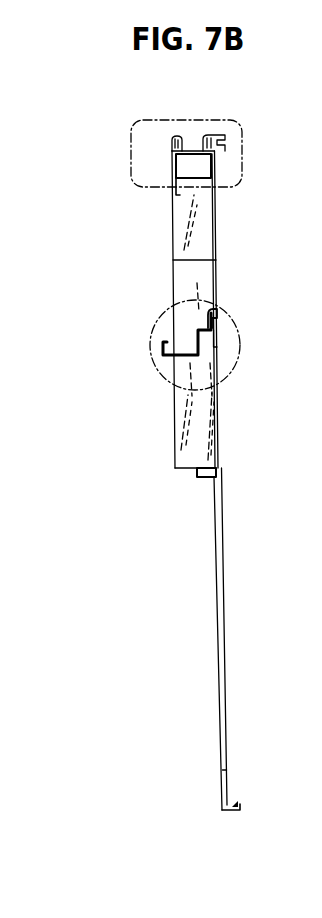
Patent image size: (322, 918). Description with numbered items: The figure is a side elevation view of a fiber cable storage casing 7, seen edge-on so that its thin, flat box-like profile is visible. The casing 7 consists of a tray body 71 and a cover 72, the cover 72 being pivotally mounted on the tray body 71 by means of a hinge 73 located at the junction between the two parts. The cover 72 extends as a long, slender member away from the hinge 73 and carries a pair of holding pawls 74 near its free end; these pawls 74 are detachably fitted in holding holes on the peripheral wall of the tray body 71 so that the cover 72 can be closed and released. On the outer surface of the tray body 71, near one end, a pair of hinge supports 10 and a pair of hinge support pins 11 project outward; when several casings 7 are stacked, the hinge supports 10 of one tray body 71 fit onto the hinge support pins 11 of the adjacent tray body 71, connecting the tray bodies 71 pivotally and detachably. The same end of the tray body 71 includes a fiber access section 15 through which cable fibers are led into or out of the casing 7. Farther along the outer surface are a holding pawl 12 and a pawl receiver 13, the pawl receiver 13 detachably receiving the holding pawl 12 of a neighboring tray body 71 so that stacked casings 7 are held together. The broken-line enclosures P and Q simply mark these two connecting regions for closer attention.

The fiber cable storage casing 7 is at (253, 145).
The hinge support 10 is at (214, 126).
The hinge support pin 11 is at (180, 126).
The holding pawl 12 is at (164, 343).
The pawl receiver 13 is at (213, 308).
The fiber access section 15 is at (201, 165).
The tray body 71 is at (217, 238).
The cover 72 is at (223, 580).
The hinge 73 is at (217, 467).
The holding pawl 74 is at (241, 807).
The region P is at (131, 143).
The region Q is at (160, 316).